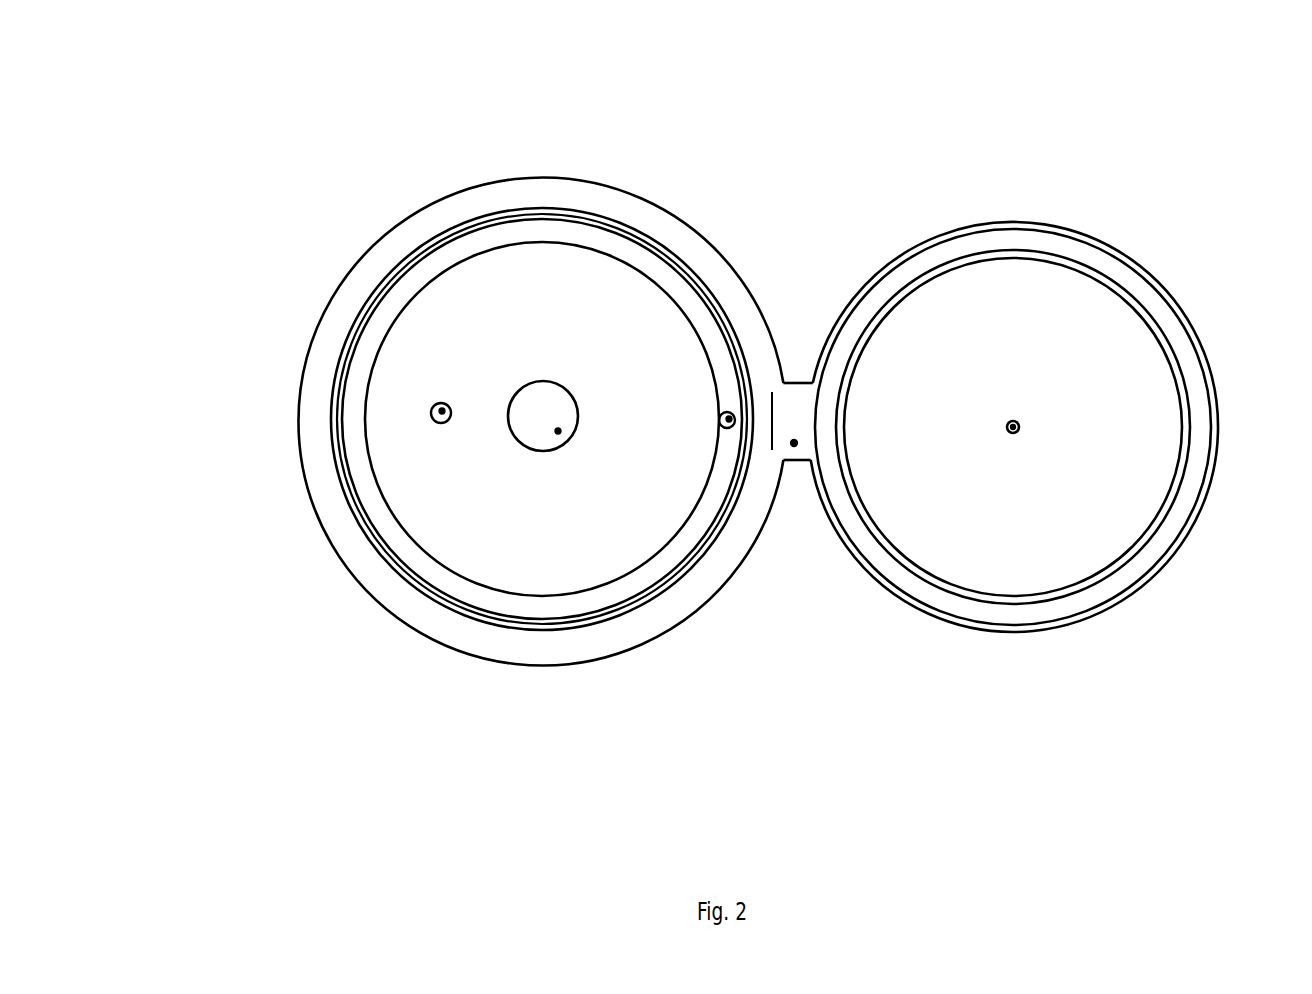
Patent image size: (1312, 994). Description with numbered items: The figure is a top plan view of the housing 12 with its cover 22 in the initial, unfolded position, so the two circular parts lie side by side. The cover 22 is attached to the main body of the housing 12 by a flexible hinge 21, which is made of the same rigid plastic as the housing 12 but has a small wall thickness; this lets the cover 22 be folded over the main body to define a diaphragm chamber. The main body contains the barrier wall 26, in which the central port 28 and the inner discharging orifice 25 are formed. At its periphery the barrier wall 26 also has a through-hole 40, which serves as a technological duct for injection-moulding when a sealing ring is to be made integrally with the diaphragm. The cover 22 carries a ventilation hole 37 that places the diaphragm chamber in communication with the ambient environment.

The housing 12 is at (471, 359).
The flexible hinge 21 is at (819, 511).
The cover 22 is at (1060, 421).
The inner discharging orifice 25 is at (476, 454).
The barrier wall 26 is at (499, 477).
The central port 28 is at (579, 444).
The ventilation hole 37 is at (1051, 463).
The through-hole 40 is at (779, 319).